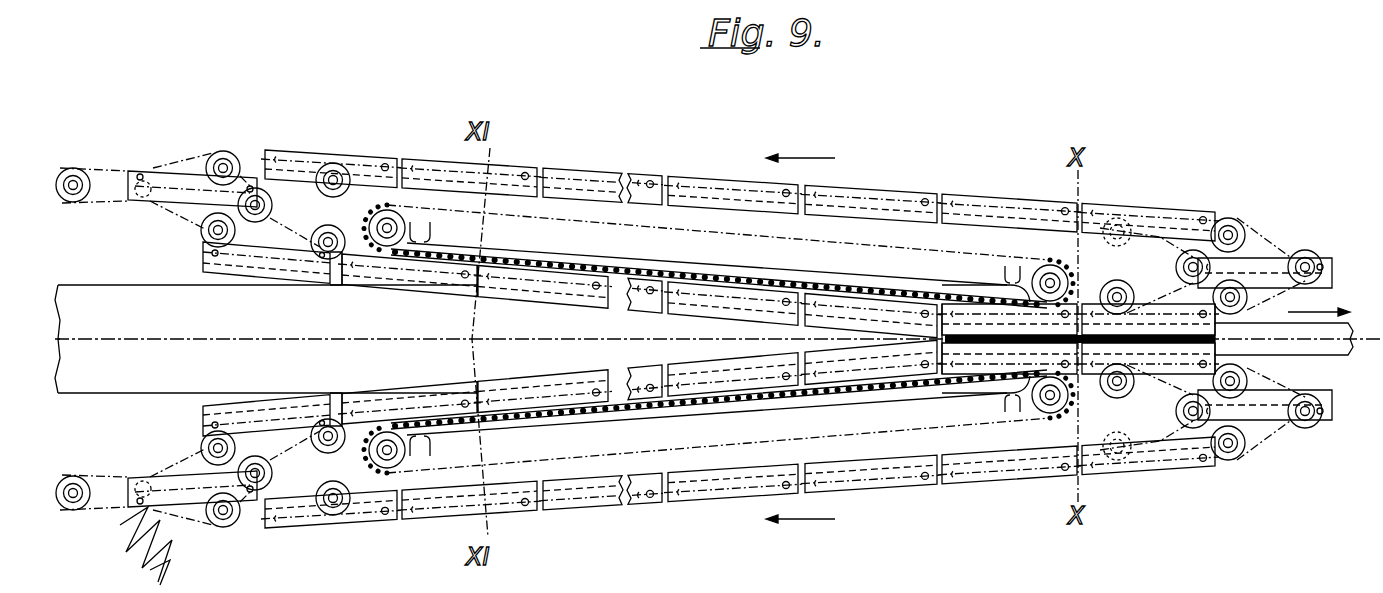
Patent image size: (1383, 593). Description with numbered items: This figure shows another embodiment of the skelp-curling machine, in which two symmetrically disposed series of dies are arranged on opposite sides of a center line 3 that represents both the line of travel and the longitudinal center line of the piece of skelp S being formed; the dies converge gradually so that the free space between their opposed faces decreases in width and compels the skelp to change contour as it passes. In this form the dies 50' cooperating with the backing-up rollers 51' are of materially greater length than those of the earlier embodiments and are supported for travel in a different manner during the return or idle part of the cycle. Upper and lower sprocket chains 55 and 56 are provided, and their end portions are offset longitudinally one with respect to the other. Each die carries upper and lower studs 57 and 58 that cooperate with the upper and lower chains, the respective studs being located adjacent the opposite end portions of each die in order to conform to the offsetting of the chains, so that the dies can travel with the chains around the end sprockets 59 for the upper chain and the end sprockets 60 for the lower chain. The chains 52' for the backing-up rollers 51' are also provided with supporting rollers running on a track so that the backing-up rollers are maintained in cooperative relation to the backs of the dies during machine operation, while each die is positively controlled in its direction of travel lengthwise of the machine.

The center line 3 is at (704, 339).
The skelp S is at (135, 383).
The dies 50' is at (824, 303).
The backing-up rollers 51' is at (718, 339).
The chains 52' is at (718, 339).
The upper sprocket chain 55 is at (300, 173).
The lower sprocket chain 56 is at (243, 153).
The upper studs 57 is at (317, 270).
The lower studs 58 is at (207, 253).
The end sprockets for the upper chain 59 is at (273, 205).
The end sprockets for the lower chain 60 is at (140, 203).